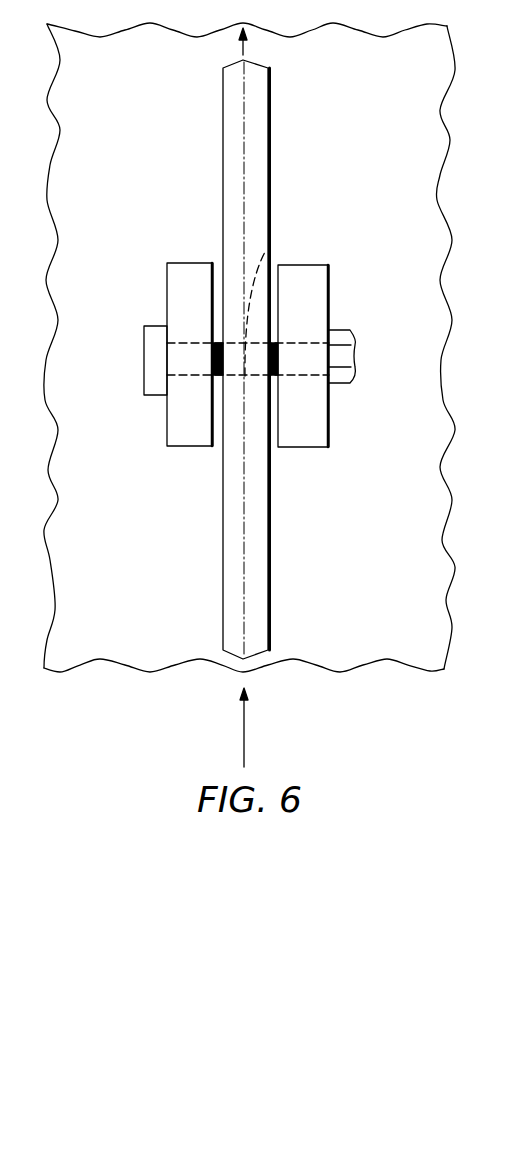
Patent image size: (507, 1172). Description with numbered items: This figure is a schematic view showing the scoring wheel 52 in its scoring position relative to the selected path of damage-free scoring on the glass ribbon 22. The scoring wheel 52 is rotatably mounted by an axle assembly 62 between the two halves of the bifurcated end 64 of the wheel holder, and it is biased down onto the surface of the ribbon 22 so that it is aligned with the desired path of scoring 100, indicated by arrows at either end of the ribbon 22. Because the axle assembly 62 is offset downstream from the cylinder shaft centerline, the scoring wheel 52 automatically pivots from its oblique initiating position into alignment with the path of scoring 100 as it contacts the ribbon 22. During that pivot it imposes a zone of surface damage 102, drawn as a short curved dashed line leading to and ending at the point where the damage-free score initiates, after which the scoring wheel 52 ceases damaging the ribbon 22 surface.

The glass ribbon 22 is at (60, 129).
The scoring wheel 52 is at (270, 112).
The axle assembly 62 is at (355, 372).
The bifurcated end 64 is at (329, 290).
The desired path of scoring 100 is at (243, 48).
The zone of surface damage 102 is at (270, 243).